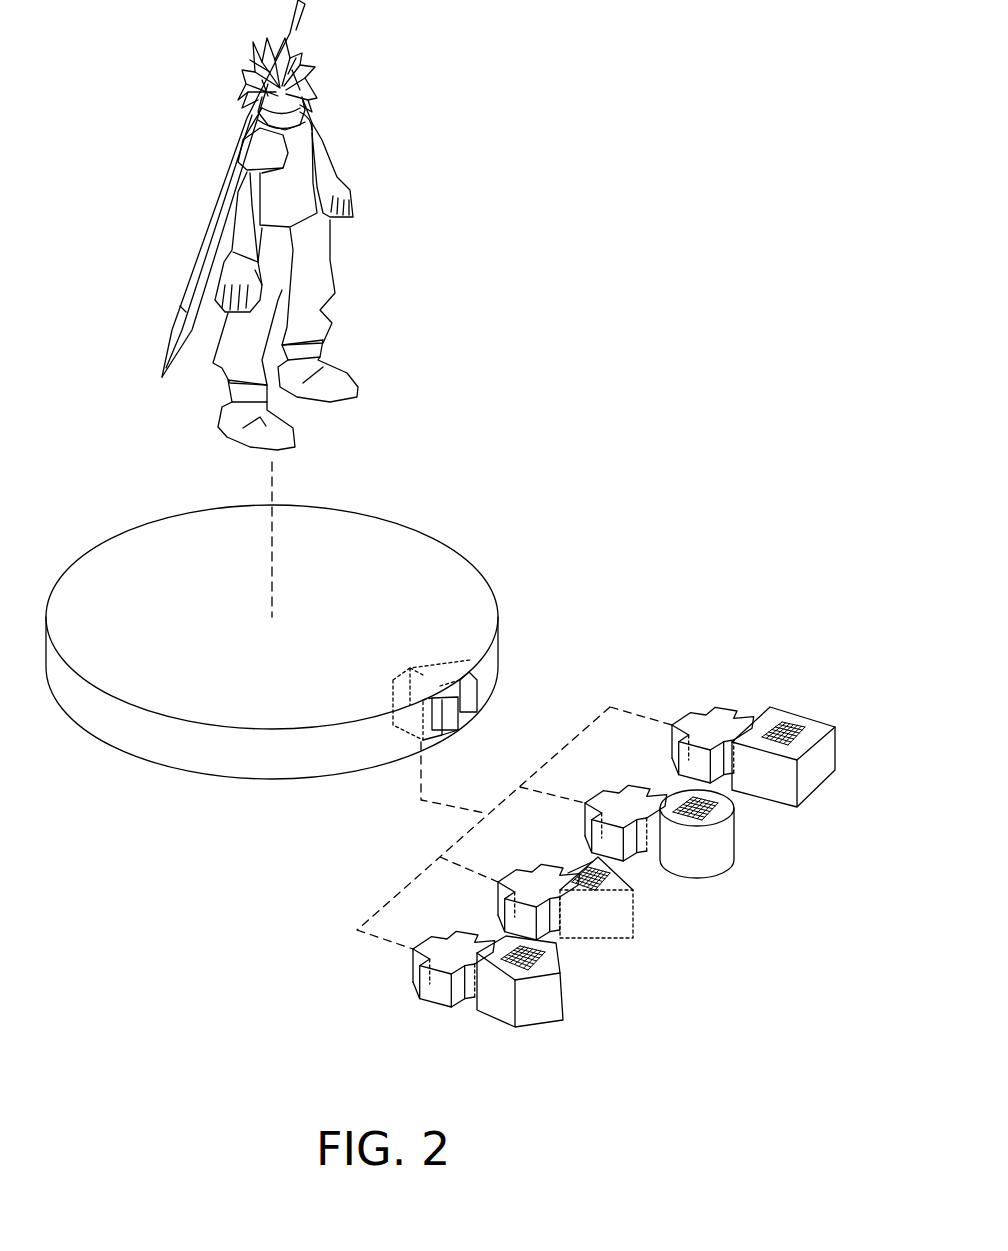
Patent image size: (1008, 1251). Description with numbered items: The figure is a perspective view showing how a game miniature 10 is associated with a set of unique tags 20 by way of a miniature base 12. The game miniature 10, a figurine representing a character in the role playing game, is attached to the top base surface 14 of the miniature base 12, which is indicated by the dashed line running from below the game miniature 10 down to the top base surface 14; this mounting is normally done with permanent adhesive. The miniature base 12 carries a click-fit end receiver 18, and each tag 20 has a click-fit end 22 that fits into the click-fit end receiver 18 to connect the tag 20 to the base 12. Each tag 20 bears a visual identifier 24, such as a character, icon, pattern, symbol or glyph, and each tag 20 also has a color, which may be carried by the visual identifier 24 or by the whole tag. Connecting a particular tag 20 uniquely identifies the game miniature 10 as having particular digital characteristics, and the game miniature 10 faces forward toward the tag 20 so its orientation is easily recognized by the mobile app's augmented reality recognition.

The game miniature 10 is at (215, 207).
The miniature base 12 is at (498, 643).
The top base surface 14 is at (405, 550).
The click-fit end receiver 18 is at (408, 667).
The unique tag 20 is at (815, 793).
The click-fit end 22 is at (613, 787).
The visual identifier 24 is at (800, 723).